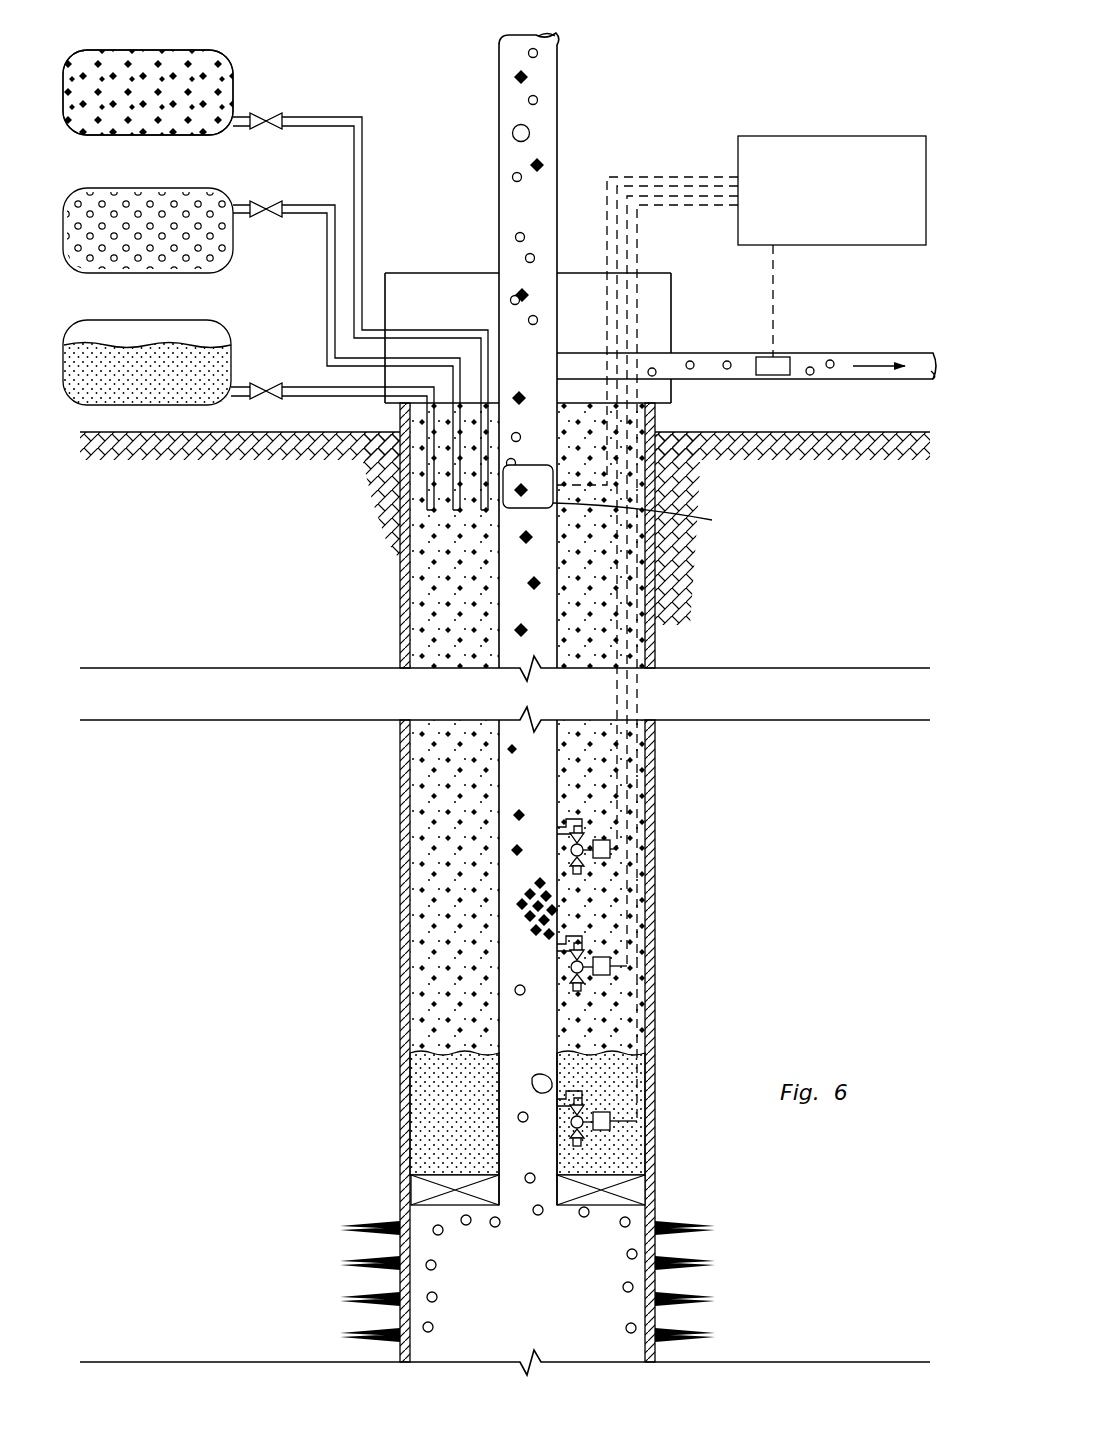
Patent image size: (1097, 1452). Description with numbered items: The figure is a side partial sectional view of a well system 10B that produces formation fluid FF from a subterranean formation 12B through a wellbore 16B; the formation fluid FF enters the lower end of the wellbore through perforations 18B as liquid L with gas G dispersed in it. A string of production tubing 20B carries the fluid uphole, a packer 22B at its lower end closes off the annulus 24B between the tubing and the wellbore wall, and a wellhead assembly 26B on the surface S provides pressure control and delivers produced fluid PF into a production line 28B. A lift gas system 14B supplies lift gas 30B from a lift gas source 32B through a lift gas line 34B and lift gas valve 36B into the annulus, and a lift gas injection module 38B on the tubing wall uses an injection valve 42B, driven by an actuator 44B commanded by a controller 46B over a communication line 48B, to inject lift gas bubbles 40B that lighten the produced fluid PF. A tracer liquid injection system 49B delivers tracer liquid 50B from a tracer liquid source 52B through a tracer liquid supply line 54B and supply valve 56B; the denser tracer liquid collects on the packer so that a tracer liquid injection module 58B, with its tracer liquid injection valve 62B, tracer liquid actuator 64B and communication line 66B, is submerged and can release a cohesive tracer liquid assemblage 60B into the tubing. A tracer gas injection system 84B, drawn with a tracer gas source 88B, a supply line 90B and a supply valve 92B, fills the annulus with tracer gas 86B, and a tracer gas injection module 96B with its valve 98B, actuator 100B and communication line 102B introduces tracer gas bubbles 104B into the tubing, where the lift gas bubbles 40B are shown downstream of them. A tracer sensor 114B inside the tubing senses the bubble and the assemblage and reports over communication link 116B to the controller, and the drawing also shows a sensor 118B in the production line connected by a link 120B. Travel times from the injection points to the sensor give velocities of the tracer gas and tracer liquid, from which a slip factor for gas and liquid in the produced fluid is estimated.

The well system 10B is at (846, 44).
The subterranean formation 12B is at (840, 618).
The lift gas system 14B is at (148, 182).
The wellbore 16B is at (406, 826).
The perforations 18B is at (356, 1262).
The production tubing 20B is at (558, 802).
The packer 22B is at (426, 1190).
The annulus 24B is at (430, 746).
The wellhead assembly 26B is at (452, 240).
The production line 28B is at (914, 353).
The lift gas 30B is at (166, 215).
The lift gas source 32B is at (233, 240).
The lift gas line 34B is at (311, 204).
The lift gas valve 36B is at (258, 203).
The lift gas injection module 38B is at (623, 870).
The lift gas bubbles 40B is at (512, 133).
The injection valve 42B is at (584, 860).
The actuator 44B is at (612, 855).
The controller 46B is at (826, 136).
The communication line 48B is at (617, 835).
The tracer liquid injection system 49B is at (148, 312).
The tracer liquid 50B is at (168, 345).
The tracer liquid source 52B is at (218, 322).
The tracer liquid supply line 54B is at (306, 396).
The tracer liquid supply valve 56B is at (258, 385).
The tracer liquid injection module 58B is at (624, 1142).
The tracer liquid assemblage 60B is at (533, 1082).
The tracer liquid injection valve 62B is at (584, 1132).
The tracer liquid actuator 64B is at (612, 1125).
The communication line 66B is at (637, 1110).
The tracer gas injection system 84B is at (148, 42).
The tracer gas 86B is at (167, 75).
The first tank 88B is at (218, 52).
The first conduit 90B is at (325, 117).
The first surface valve 92B is at (256, 115).
The tracer gas injection module 96B is at (624, 986).
The valve 98B is at (584, 977).
The actuator 100B is at (612, 970).
The communication line 102B is at (627, 950).
The tracer gas bubble 104B is at (516, 490).
The tracer sensor 114B is at (662, 519).
The communication link 116B is at (645, 177).
The flow sensor 118B is at (773, 380).
The sensor signal line 120B is at (775, 286).
The surface S is at (816, 432).
The produced fluid PF is at (875, 366).
The formation fluid FF is at (543, 1277).
The gas G is at (436, 1297).
The liquid L is at (588, 1308).